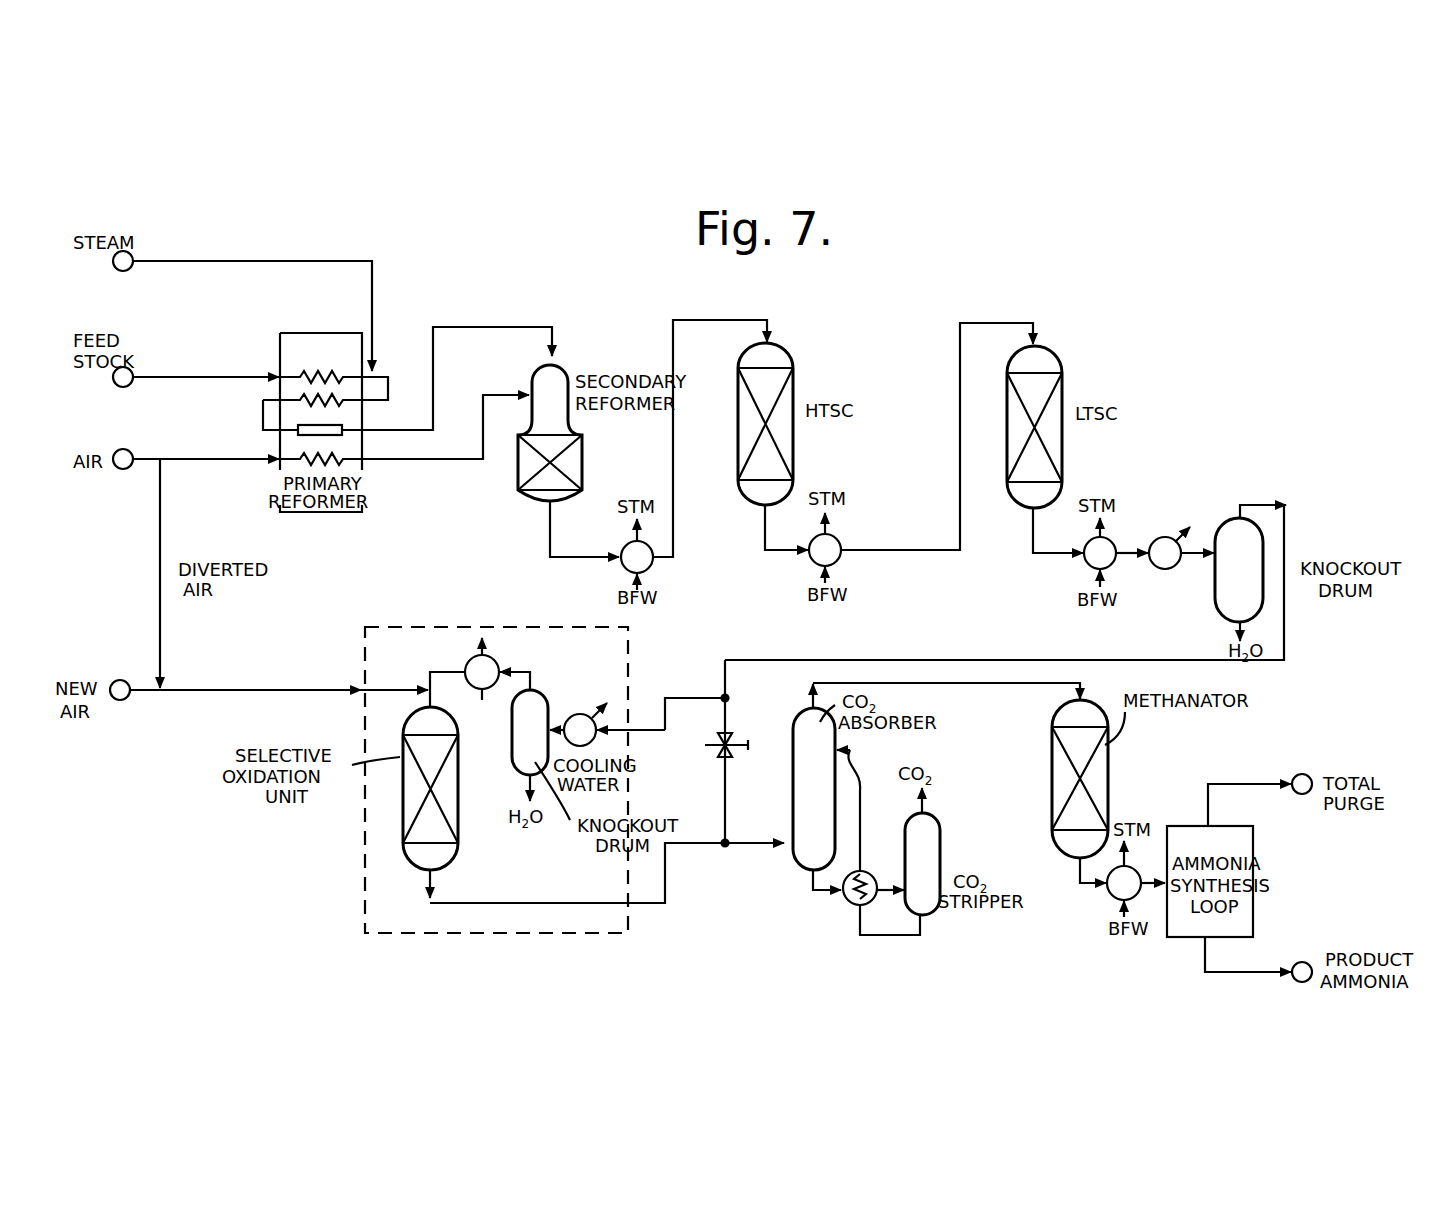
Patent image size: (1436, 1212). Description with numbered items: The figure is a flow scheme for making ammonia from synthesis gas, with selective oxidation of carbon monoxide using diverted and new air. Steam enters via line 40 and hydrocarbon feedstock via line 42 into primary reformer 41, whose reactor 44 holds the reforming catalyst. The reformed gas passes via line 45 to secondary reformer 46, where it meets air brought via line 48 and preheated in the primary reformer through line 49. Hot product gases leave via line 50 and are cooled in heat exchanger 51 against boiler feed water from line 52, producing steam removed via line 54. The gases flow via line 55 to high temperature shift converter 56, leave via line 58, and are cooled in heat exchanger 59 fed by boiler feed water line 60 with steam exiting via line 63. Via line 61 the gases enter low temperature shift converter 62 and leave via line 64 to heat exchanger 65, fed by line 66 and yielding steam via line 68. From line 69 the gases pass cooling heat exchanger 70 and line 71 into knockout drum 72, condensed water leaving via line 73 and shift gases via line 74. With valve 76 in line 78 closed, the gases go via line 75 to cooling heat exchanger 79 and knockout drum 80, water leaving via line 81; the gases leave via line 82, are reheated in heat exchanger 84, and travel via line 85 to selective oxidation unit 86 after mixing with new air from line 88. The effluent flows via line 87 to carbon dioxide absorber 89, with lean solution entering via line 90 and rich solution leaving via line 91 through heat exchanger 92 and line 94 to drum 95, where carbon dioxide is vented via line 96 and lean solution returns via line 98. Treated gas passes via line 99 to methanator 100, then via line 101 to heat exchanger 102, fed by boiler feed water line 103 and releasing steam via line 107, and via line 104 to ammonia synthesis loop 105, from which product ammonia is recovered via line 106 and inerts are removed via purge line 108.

The steam line 40 is at (236, 261).
The primary reformer 41 is at (318, 333).
The feedstock line 42 is at (196, 377).
The reactor 44 is at (325, 428).
The reformed gas line 45 is at (485, 327).
The secondary reformer 46 is at (562, 372).
The air line 48 is at (192, 459).
The preheated air line 49 is at (420, 462).
The secondary reformer product line 50 is at (548, 535).
The heat exchanger 51 is at (622, 572).
The boiler feed water line 52 is at (645, 578).
The steam line 54 is at (633, 530).
The cooled reformer gas line 55 is at (673, 455).
The high temperature shift converter 56 is at (790, 385).
The shift gas line 58 is at (758, 527).
The heat exchanger 59 is at (845, 545).
The boiler feed water line 60 is at (840, 578).
The cooled gas line 61 is at (1006, 321).
The low temperature shift converter 62 is at (1062, 372).
The steam line 63 is at (818, 528).
The shift gas line 64 is at (1023, 525).
The heat exchanger 65 is at (1115, 540).
The boiler feed water line 66 is at (1085, 580).
The steam line 68 is at (1088, 540).
The gas line 69 is at (1133, 551).
The cooling heat exchanger 70 is at (1168, 568).
The cooled gas line 71 is at (1198, 547).
The knockout drum 72 is at (1213, 592).
The condensed water line 73 is at (1228, 640).
The shift gas line 74 is at (1258, 505).
The bypass line 75 is at (685, 698).
The valve 76 is at (712, 756).
The line 78 is at (728, 710).
The cooling heat exchanger 79 is at (569, 714).
The knockout drum 80 is at (512, 738).
The water line 81 is at (522, 782).
The gas line 82 is at (528, 670).
The heat exchanger 84 is at (465, 660).
The superheated gas line 85 is at (420, 680).
The selective oxidation unit 86 is at (403, 770).
The effluent line 87 is at (527, 903).
The air line 88 is at (203, 688).
The carbon dioxide absorber 89 is at (793, 793).
The lean solution line 90 is at (860, 786).
The rich solution line 91 is at (810, 882).
The heat exchanger 92 is at (862, 870).
The solution line 94 is at (885, 882).
The drum 95 is at (940, 853).
The carbon dioxide vent line 96 is at (925, 800).
The lean solution return line 98 is at (860, 925).
The absorber overhead line 99 is at (945, 683).
The methanator 100 is at (1052, 770).
The methanator effluent line 101 is at (1075, 875).
The heat exchanger 102 is at (1135, 865).
The boiler feed water line 103 is at (1118, 910).
The synthesis gas line 104 is at (1152, 878).
The ammonia synthesis loop 105 is at (1255, 838).
The product ammonia line 106 is at (1228, 972).
The steam line 107 is at (1118, 875).
The purge line 108 is at (1237, 784).